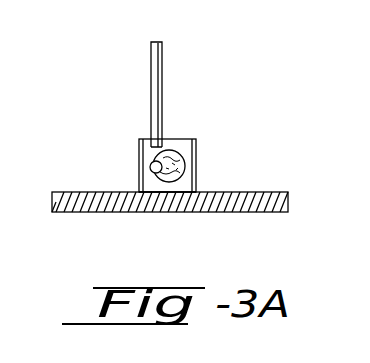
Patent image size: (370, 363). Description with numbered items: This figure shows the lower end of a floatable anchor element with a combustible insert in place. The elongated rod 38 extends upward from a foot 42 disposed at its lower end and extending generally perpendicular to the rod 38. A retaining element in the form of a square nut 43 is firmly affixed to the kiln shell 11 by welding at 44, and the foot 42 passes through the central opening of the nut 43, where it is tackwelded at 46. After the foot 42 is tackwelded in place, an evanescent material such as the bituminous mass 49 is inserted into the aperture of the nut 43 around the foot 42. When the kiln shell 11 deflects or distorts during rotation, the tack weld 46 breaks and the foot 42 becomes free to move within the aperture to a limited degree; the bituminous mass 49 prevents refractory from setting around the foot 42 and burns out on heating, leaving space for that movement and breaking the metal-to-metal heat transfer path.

The kiln shell 11 is at (257, 193).
The elongated rod 38 is at (162, 66).
The foot portion 42 is at (147, 160).
The square nut 43 is at (193, 139).
The weld 44 is at (140, 192).
The tack weld 46 is at (150, 167).
The bituminous mass 49 is at (186, 162).